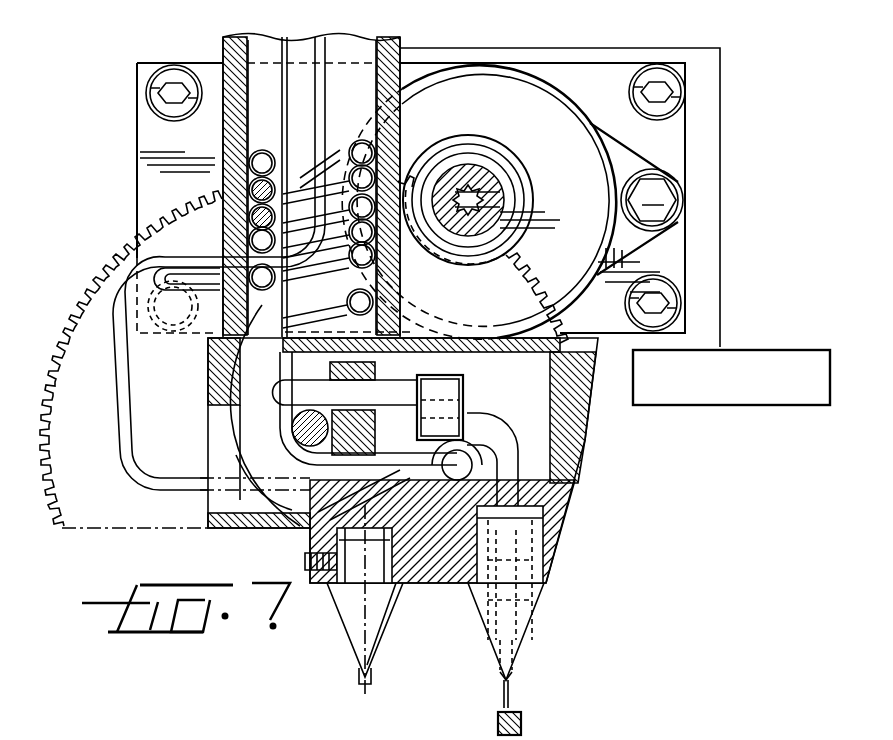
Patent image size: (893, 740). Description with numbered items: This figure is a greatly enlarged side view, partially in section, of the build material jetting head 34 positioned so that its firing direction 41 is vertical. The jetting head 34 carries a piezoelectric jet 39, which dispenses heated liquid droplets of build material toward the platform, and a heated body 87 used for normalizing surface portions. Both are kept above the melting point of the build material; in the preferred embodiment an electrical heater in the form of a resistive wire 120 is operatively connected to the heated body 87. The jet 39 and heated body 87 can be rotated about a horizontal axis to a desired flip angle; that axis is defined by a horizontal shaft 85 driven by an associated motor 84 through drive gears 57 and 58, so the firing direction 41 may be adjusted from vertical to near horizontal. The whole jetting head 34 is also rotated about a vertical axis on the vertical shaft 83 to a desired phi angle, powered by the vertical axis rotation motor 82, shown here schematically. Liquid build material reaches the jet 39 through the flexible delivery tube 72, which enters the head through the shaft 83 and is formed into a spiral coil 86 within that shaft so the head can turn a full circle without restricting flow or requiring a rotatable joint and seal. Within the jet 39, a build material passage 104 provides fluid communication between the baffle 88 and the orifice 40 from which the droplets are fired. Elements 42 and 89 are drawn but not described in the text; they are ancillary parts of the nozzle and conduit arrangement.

The jetting head 34 is at (122, 150).
The piezoelectric jet 39 is at (540, 592).
The orifice 40 is at (500, 684).
The firing direction 41 is at (514, 692).
The workpiece 42 is at (485, 726).
The drive gear 57 is at (503, 178).
The drive gear 58 is at (520, 278).
The delivery tube 72 is at (337, 128).
The vertical axis rotation motor 82 is at (586, 255).
The vertical shaft 83 is at (400, 48).
The motor 84 is at (553, 297).
The horizontal shaft 85 is at (283, 445).
The spiral coil 86 is at (223, 223).
The heated body 87 is at (383, 618).
The baffle 88 is at (464, 396).
The elbow fitting 89 is at (468, 412).
The build material passage 104 is at (520, 643).
The resistive wire 120 is at (306, 527).